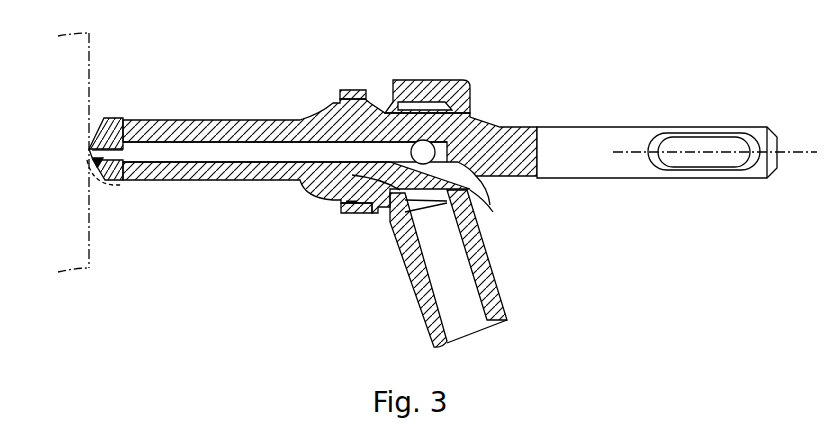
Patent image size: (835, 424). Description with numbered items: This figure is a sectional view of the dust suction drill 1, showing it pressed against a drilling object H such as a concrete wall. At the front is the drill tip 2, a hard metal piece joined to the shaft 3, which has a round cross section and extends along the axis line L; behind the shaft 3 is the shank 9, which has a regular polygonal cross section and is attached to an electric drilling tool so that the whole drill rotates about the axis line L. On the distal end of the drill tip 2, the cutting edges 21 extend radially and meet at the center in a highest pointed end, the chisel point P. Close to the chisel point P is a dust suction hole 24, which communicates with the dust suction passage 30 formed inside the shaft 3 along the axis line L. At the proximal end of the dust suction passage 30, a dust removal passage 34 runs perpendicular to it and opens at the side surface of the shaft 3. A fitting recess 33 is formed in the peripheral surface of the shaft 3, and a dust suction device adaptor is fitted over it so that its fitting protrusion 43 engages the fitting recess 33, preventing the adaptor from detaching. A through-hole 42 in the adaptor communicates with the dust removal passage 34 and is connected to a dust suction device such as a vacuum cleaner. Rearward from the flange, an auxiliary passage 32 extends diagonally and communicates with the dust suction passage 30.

The dust suction drill 1 is at (622, 230).
The drill tip 2 is at (113, 118).
The shaft 3 is at (248, 137).
The shank 9 is at (582, 153).
The cutting edge 21 is at (90, 152).
The dust suction hole 24 is at (100, 160).
The dust suction passage 30 is at (298, 150).
The auxiliary passage 32 is at (490, 205).
The fitting recess 33 is at (383, 110).
The dust removal passage 34 is at (425, 150).
The through-hole 42 is at (448, 326).
The fitting protrusion 43 is at (353, 214).
The drilling object H is at (96, 44).
The chisel point P is at (92, 142).
The axis line L is at (787, 150).